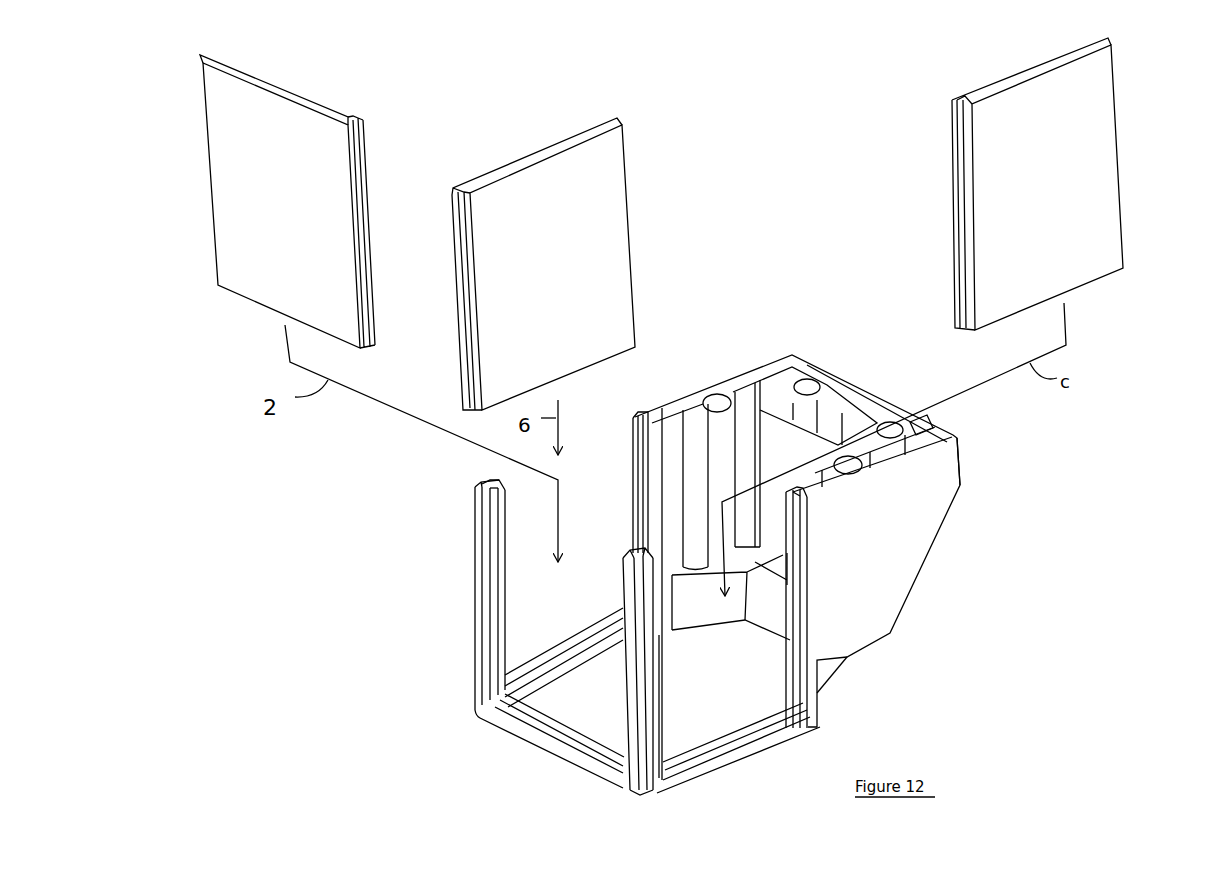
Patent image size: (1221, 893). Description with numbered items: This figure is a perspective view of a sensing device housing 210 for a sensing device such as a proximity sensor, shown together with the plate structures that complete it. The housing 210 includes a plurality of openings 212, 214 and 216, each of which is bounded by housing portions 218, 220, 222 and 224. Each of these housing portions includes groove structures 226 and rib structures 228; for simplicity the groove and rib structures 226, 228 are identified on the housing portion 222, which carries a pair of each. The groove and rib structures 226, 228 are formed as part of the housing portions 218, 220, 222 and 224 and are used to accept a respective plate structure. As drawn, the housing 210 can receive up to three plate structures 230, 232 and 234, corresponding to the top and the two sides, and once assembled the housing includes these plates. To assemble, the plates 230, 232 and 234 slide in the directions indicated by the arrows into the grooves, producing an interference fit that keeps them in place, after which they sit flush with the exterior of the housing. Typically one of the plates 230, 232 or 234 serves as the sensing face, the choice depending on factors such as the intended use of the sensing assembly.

The sensing device housing 210 is at (923, 563).
The opening 212 is at (717, 717).
The opening 214 is at (565, 690).
The opening 216 is at (612, 457).
The housing portion 218 is at (815, 732).
The housing portion 220 is at (637, 727).
The housing portion 222 is at (487, 593).
The housing portion 224 is at (633, 495).
The groove structure 226 is at (473, 483).
The rib structure 228 is at (505, 495).
The plate structure 230 is at (223, 143).
The plate structure 232 is at (610, 232).
The plate structure 234 is at (1097, 170).